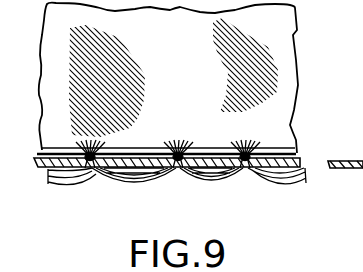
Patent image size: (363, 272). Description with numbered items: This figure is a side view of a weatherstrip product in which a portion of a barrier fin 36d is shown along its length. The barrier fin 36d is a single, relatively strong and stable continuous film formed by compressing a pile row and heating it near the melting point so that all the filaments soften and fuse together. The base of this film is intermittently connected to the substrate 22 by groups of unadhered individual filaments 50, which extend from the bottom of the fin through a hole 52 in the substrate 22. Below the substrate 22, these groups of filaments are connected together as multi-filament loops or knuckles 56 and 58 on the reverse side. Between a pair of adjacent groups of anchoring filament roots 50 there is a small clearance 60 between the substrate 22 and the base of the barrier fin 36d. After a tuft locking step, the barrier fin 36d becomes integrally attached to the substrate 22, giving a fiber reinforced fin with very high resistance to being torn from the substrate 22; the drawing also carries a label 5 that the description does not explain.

The barrier fin 36d is at (295, 34).
The substrate 22 is at (298, 157).
The individual filaments 50 is at (165, 157).
The clearance 60 is at (217, 155).
The hole 52 is at (197, 165).
The multi-filament loop 56 is at (130, 168).
The multi-filament loop 58 is at (246, 166).
The strip segment 5 is at (345, 188).